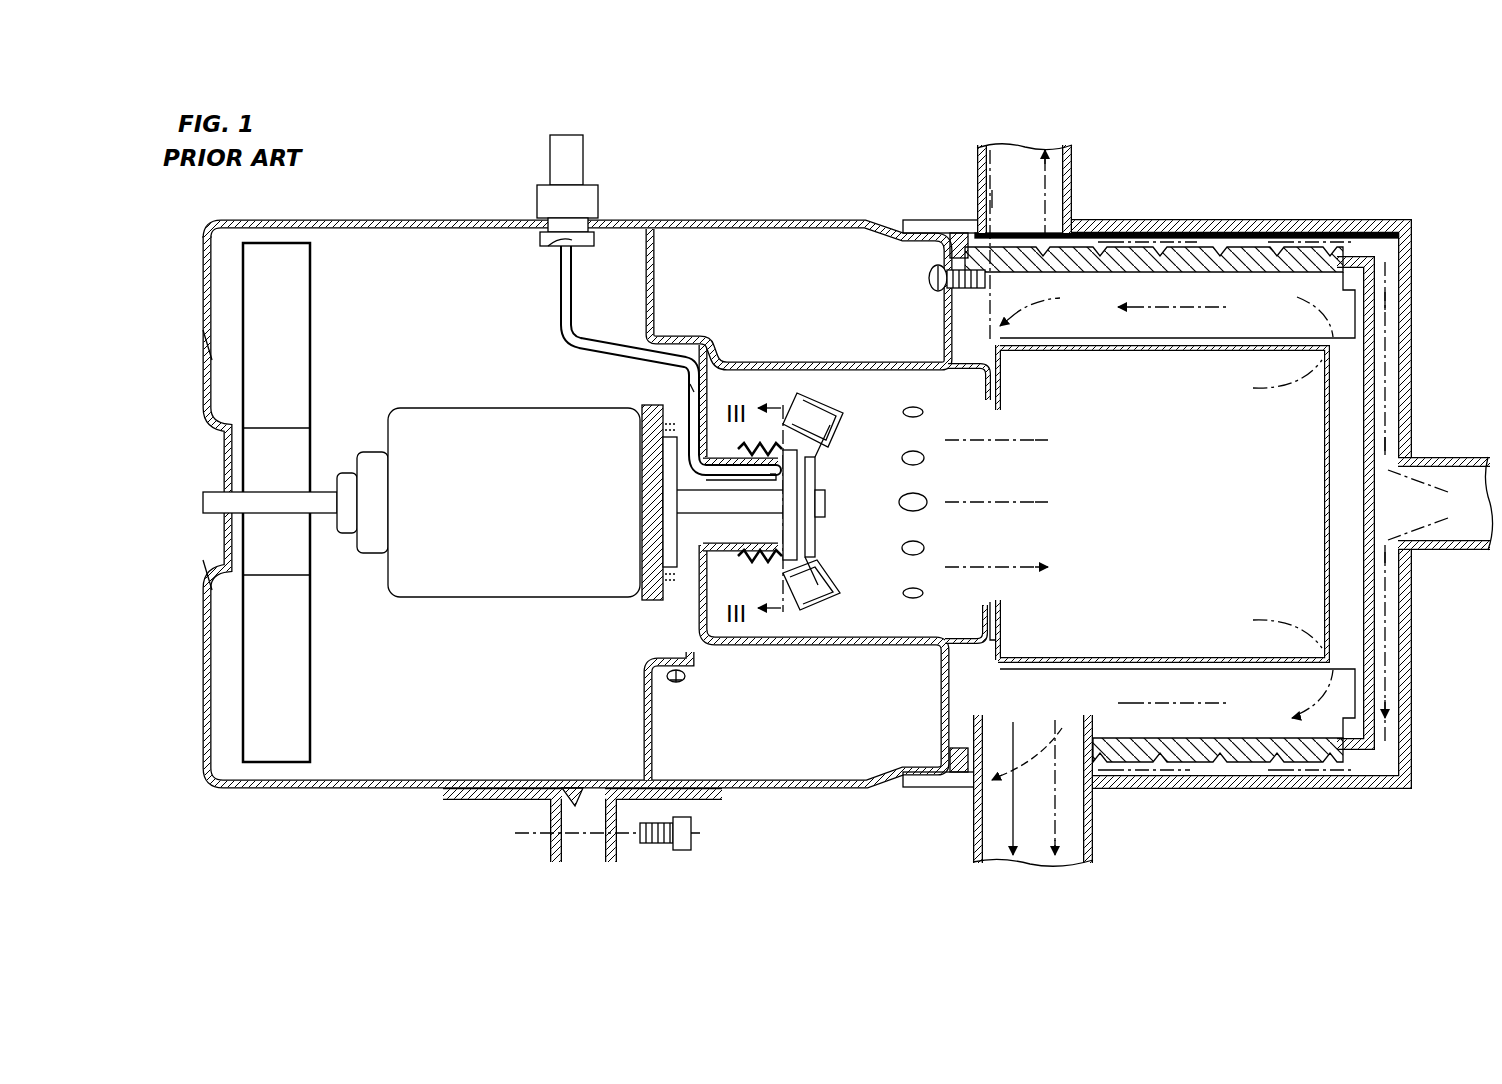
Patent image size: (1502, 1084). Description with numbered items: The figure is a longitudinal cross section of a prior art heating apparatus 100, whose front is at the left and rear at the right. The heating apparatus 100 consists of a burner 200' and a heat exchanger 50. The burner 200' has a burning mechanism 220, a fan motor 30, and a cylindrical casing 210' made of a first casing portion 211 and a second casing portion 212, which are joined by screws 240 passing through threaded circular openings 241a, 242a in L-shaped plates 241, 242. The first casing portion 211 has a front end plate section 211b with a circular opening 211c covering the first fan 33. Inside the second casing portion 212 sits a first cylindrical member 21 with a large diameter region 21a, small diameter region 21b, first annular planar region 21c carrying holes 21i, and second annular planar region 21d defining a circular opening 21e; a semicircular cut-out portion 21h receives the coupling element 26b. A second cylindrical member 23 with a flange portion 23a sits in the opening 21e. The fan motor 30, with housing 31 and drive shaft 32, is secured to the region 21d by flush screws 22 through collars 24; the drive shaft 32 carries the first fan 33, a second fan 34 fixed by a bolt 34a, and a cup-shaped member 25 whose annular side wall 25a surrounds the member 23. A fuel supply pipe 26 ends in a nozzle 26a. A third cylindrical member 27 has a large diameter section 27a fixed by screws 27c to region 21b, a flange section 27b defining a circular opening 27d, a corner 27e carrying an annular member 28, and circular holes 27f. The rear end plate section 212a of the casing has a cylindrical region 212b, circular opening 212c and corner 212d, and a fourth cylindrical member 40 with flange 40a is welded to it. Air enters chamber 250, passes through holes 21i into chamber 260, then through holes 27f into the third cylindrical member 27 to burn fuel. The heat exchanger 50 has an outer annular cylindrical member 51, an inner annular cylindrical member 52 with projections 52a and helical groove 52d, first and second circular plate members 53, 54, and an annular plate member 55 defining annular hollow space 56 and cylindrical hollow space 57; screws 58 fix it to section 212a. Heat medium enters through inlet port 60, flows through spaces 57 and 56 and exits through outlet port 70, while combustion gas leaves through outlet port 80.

The heating apparatus 100 is at (783, 216).
The burner 200' is at (577, 261).
The cylindrical casing 210' is at (782, 188).
The first casing portion 211 is at (300, 790).
The front end plate section 211b is at (200, 347).
The circular opening 211c is at (200, 577).
The second casing portion 212 is at (813, 790).
The rear end plate section 212a is at (940, 722).
The cylindrical region 212b is at (944, 672).
The circular opening 212c is at (1004, 398).
The corner 212d is at (1006, 358).
The burning mechanism 220 is at (818, 648).
The screws 240 is at (694, 832).
The L-shaped plate 241 is at (553, 868).
The circular opening 241a is at (548, 838).
The L-shaped plate 242 is at (613, 868).
The circular opening 242a is at (620, 845).
The chamber 250 is at (470, 751).
The chamber 260 is at (796, 696).
The first cylindrical member 21 is at (656, 268).
The large diameter region 21a is at (608, 248).
The small diameter region 21b is at (672, 662).
The first annular planar region 21c is at (656, 332).
The second annular planar region 21d is at (692, 645).
The circular opening 21e is at (708, 534).
The semicircular cut-out portion 21h is at (553, 250).
The holes 21i is at (655, 302).
The flush screws 22 is at (695, 600).
The second cylindrical member 23 is at (808, 437).
The flange portion 23a is at (690, 392).
The collars 24 is at (650, 590).
The cup-shaped member 25 is at (833, 568).
The annular side wall 25a is at (752, 442).
The fuel supply pipe 26 is at (565, 350).
The nozzle 26a is at (782, 478).
The coupling element 26b is at (590, 200).
The third cylindrical member 27 is at (818, 362).
The large diameter section 27a is at (662, 700).
The flange section 27b is at (975, 642).
The screws 27c is at (678, 684).
The circular opening 27d is at (982, 392).
The corner 27e is at (953, 362).
The circular holes 27f is at (926, 498).
The annular member 28 is at (1002, 642).
The fan motor 30 is at (445, 600).
The housing 31 is at (442, 410).
The drive shaft 32 is at (320, 494).
The first fan 33 is at (300, 750).
The second fan 34 is at (818, 532).
The bolt 34a is at (828, 503).
The fourth cylindrical member 40 is at (1150, 655).
The flange 40a is at (1002, 625).
The heat exchanger 50 is at (1235, 247).
The outer annular cylindrical member 51 is at (1295, 790).
The inner annular cylindrical member 52 is at (1210, 764).
The projections 52a is at (1302, 290).
The helical groove 52d is at (1278, 260).
The first circular plate member 53 is at (1414, 330).
The second circular plate member 54 is at (1376, 380).
The annular plate member 55 is at (956, 235).
The annular hollow space 56 is at (1218, 246).
The cylindrical hollow space 57 is at (1390, 416).
The screws 58 is at (927, 284).
The heat medium inlet port 60 is at (1455, 553).
The heat medium outlet port 70 is at (1073, 200).
The combustion gas outlet port 80 is at (1096, 845).